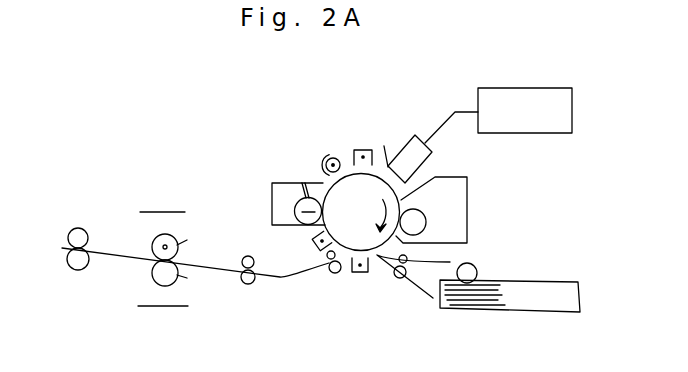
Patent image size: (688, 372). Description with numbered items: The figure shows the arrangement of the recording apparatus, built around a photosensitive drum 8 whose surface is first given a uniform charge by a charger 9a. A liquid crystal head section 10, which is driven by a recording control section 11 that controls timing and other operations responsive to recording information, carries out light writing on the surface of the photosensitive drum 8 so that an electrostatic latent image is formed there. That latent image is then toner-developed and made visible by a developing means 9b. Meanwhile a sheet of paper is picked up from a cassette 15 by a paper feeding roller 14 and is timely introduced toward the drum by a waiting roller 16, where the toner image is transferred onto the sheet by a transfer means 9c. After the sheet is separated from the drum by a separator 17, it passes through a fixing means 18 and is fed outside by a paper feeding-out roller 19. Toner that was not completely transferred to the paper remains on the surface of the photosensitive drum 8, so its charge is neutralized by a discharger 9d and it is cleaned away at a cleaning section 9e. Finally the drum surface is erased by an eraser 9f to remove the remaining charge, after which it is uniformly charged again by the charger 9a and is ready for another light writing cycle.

The photosensitive drum 8 is at (355, 183).
The charger 9a is at (367, 148).
The developing means 9b is at (468, 207).
The transfer means 9c is at (358, 273).
The discharger 9d is at (312, 247).
The cleaning section 9e is at (300, 183).
The eraser 9f is at (330, 157).
The liquid crystal head section 10 is at (432, 148).
The recording control section 11 is at (487, 87).
The paper feeding roller 14 is at (470, 265).
The cassette 15 is at (555, 280).
The waiting roller 16 is at (400, 278).
The separator 17 is at (331, 273).
The fixing means 18 is at (173, 212).
The paper feeding-out roller 19 is at (80, 228).